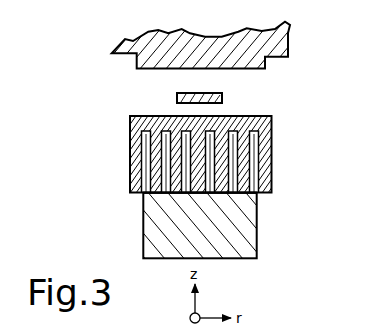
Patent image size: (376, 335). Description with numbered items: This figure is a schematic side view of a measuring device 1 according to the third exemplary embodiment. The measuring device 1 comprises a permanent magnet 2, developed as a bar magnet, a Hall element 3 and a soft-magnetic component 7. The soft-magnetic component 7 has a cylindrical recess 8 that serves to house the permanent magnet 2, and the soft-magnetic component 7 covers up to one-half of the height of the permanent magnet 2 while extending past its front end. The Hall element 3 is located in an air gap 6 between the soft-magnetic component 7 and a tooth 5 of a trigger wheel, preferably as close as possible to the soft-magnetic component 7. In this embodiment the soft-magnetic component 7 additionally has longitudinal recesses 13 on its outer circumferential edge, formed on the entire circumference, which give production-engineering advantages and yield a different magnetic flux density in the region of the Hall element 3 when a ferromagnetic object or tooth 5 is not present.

The measuring device 1 is at (90, 142).
The permanent magnet 2 is at (250, 227).
The Hall element 3 is at (222, 97).
The tooth 5 is at (252, 62).
The air gap 6 is at (153, 78).
The soft-magnetic component 7 is at (272, 132).
The cylindrical recess 8 is at (242, 150).
The longitudinal recesses 13 is at (143, 207).